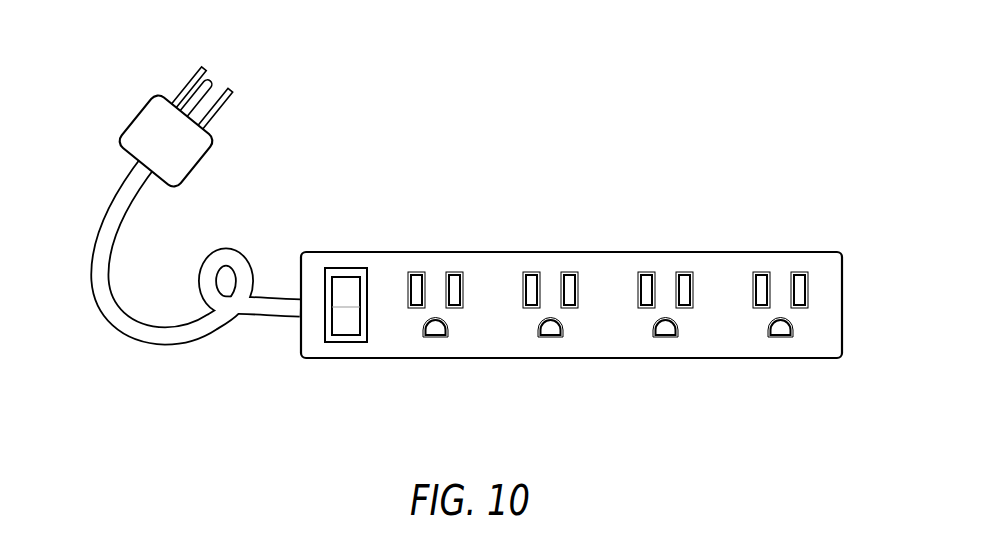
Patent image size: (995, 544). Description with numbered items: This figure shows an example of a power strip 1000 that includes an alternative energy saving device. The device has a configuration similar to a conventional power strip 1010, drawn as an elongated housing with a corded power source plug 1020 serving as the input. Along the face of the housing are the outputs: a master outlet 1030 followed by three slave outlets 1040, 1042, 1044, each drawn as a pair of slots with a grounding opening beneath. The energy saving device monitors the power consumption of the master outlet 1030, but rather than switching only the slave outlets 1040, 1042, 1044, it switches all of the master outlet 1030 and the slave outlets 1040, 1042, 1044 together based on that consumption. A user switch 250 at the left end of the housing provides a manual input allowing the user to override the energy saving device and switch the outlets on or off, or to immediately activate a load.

The power strip 1000 is at (456, 234).
The power strip 1010 is at (548, 305).
The power source plug 1020 is at (140, 112).
The user switch 250 is at (348, 272).
The master outlet 1030 is at (433, 260).
The slave outlet 1040 is at (552, 260).
The slave outlet 1042 is at (665, 260).
The slave outlet 1044 is at (782, 260).